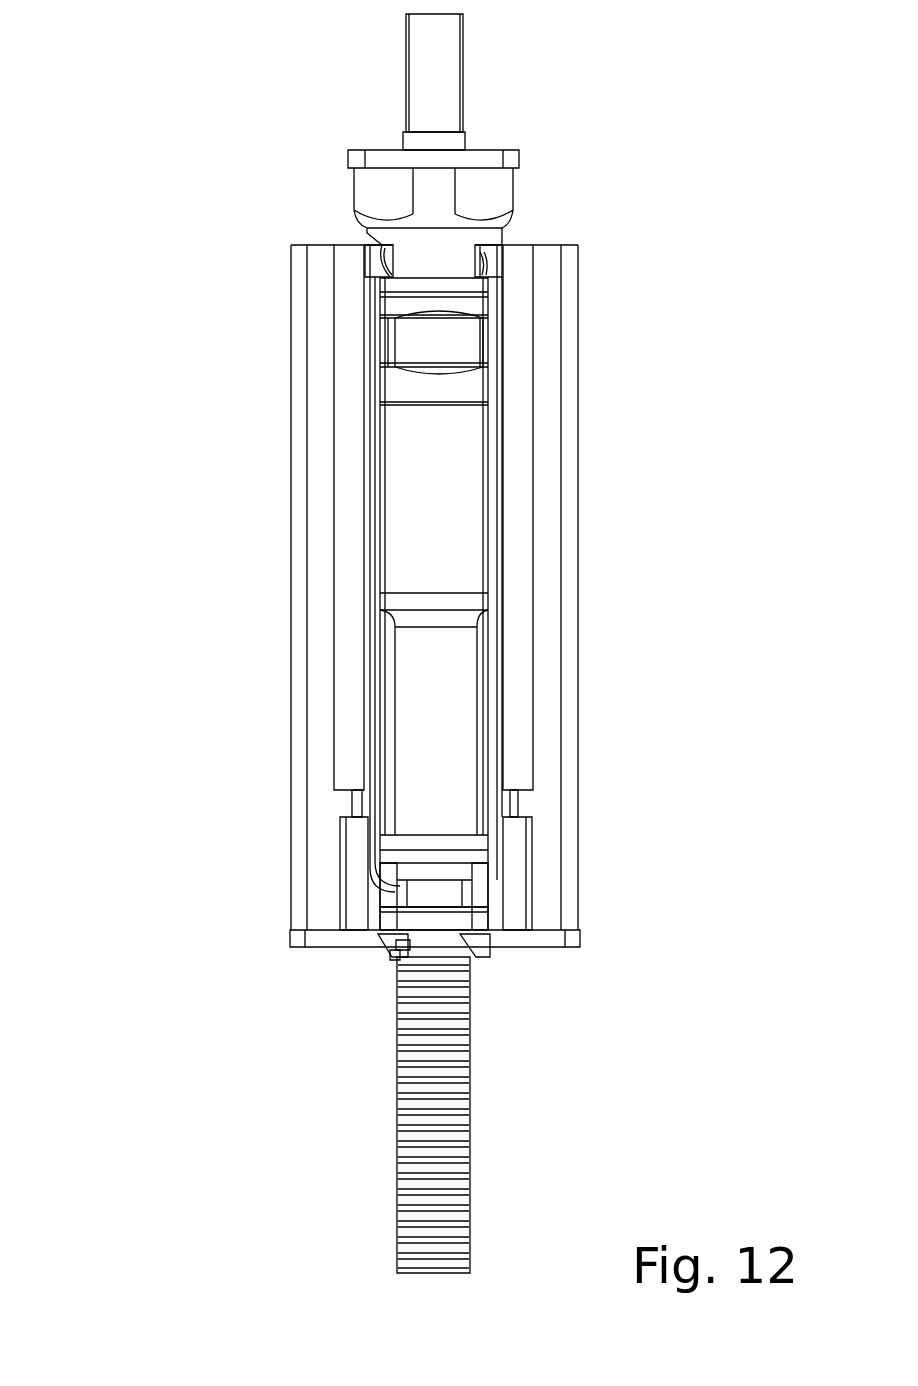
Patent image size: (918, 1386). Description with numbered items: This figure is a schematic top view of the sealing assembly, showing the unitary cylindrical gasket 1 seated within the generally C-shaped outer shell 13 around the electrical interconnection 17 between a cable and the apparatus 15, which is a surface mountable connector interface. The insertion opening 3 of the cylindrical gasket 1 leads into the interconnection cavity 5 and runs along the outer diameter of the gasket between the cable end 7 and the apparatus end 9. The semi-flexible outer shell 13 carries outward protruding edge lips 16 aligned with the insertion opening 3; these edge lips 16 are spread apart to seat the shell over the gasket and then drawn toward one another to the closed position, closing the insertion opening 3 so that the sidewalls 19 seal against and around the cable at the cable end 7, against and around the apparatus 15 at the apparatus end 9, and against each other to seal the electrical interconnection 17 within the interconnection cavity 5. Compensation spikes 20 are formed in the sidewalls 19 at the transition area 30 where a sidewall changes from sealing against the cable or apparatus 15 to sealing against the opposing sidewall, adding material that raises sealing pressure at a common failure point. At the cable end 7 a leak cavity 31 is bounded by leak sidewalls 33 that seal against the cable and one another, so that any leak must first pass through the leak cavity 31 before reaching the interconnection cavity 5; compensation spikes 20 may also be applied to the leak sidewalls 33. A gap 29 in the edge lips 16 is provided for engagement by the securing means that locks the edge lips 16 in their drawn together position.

The cylindrical gasket 1 is at (292, 940).
The insertion opening 3 is at (440, 452).
The interconnection cavity 5 is at (440, 550).
The cable end 7 is at (490, 1012).
The apparatus end 9 is at (540, 225).
The outer shell 13 is at (318, 636).
The apparatus 15 is at (437, 188).
The edge lip 16 is at (350, 508).
The electrical interconnection 17 is at (440, 337).
The sidewall 19 is at (378, 412).
The compensation spike 20 is at (390, 268).
The gap 29 is at (357, 800).
The transition area 30 is at (372, 245).
The leak cavity 31 is at (480, 918).
The leak sidewall 33 is at (477, 890).